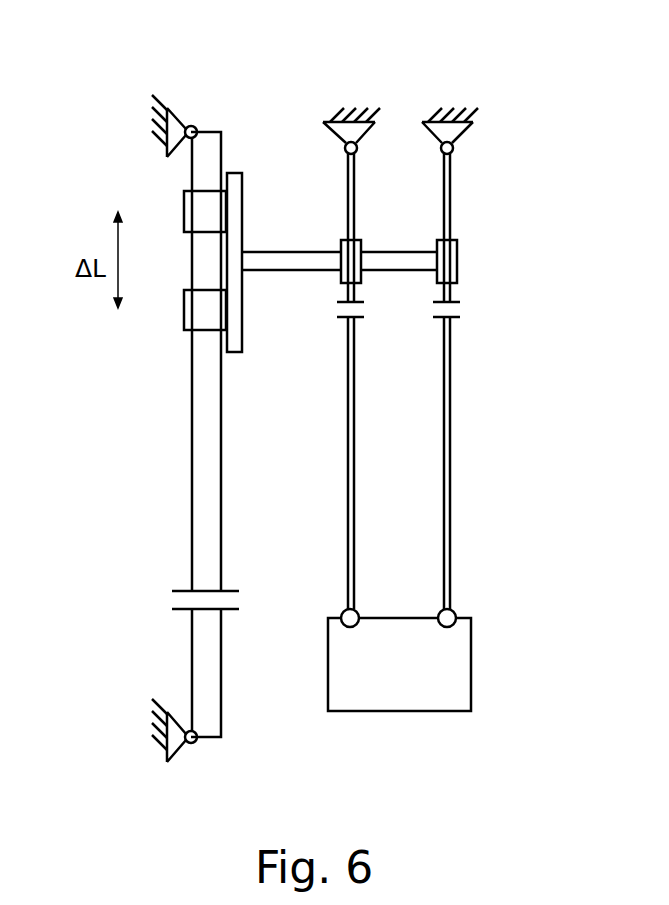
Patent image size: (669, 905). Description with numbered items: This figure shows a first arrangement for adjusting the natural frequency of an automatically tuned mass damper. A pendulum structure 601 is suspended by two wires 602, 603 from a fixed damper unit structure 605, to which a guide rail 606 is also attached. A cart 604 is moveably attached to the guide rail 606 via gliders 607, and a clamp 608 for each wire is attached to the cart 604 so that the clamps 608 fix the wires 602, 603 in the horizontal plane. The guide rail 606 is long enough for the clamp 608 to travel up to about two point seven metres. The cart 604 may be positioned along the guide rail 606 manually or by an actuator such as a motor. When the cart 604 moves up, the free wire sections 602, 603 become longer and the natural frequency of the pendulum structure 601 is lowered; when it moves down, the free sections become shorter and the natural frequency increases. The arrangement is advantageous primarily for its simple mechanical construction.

The pendulum structure 601 is at (457, 660).
The wire 602 is at (450, 403).
The wire 603 is at (355, 390).
The cart 604 is at (232, 178).
The fixed damper unit structure 605 is at (150, 125).
The guide rail 606 is at (197, 520).
The gliders 607 is at (197, 212).
The clamp 608 is at (361, 242).